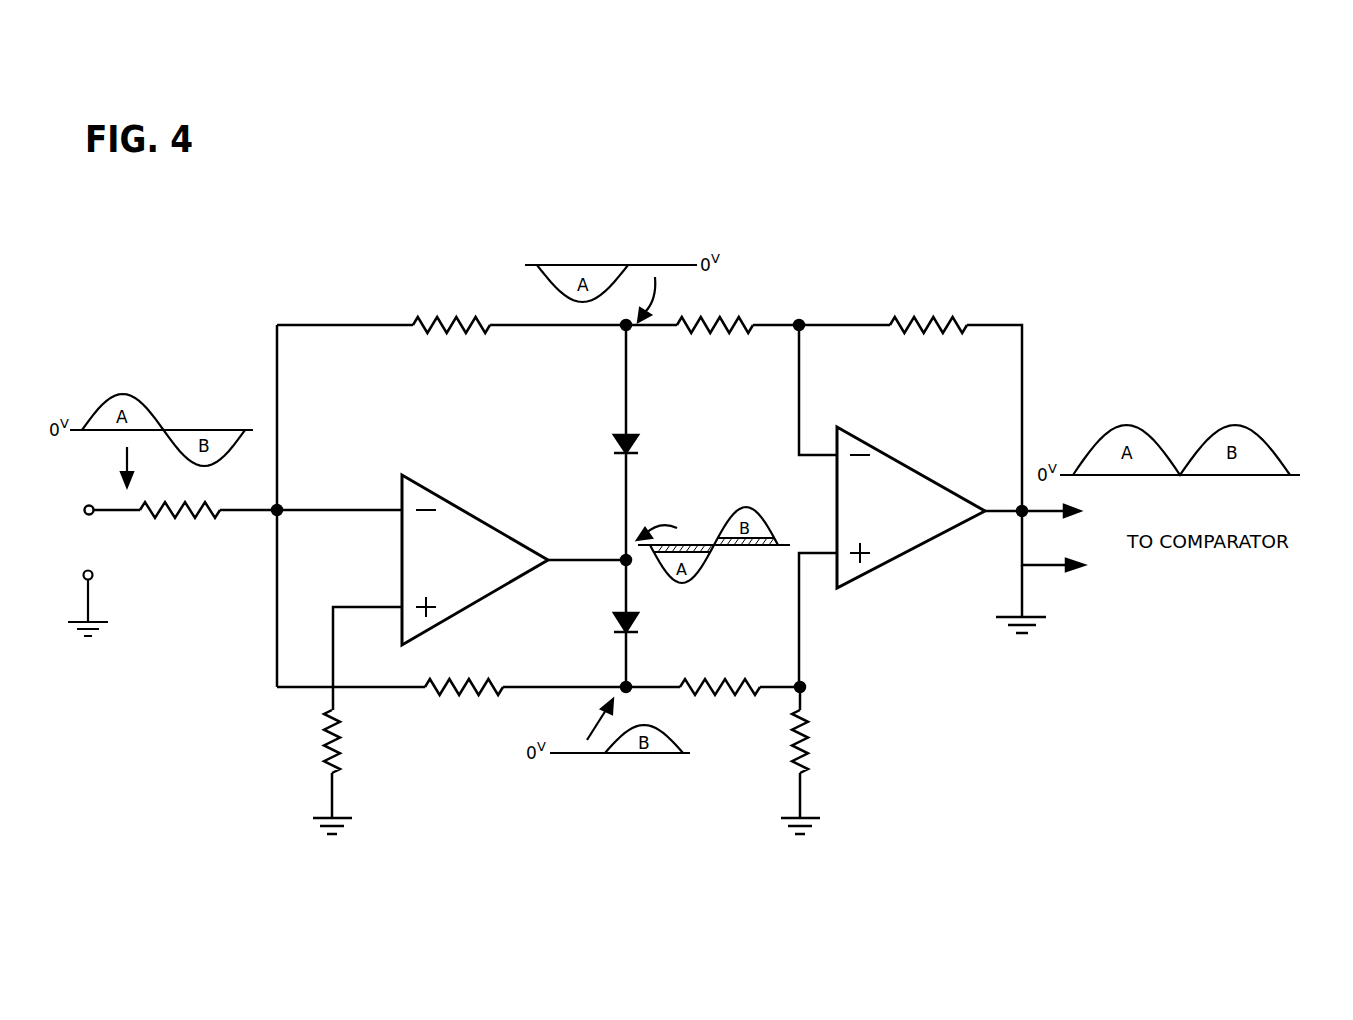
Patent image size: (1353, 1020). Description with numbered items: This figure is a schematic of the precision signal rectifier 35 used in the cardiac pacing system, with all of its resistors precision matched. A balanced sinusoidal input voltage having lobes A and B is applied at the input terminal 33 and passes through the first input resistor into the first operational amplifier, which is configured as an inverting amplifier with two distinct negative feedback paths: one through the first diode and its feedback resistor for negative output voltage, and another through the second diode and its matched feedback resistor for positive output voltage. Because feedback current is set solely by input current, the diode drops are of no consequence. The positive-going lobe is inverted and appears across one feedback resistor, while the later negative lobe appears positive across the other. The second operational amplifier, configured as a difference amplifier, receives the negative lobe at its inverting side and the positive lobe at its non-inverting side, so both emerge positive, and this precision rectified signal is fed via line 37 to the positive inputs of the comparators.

The input terminal 33 is at (125, 512).
The precision signal rectifier 35 is at (786, 262).
The line 37 is at (1040, 516).